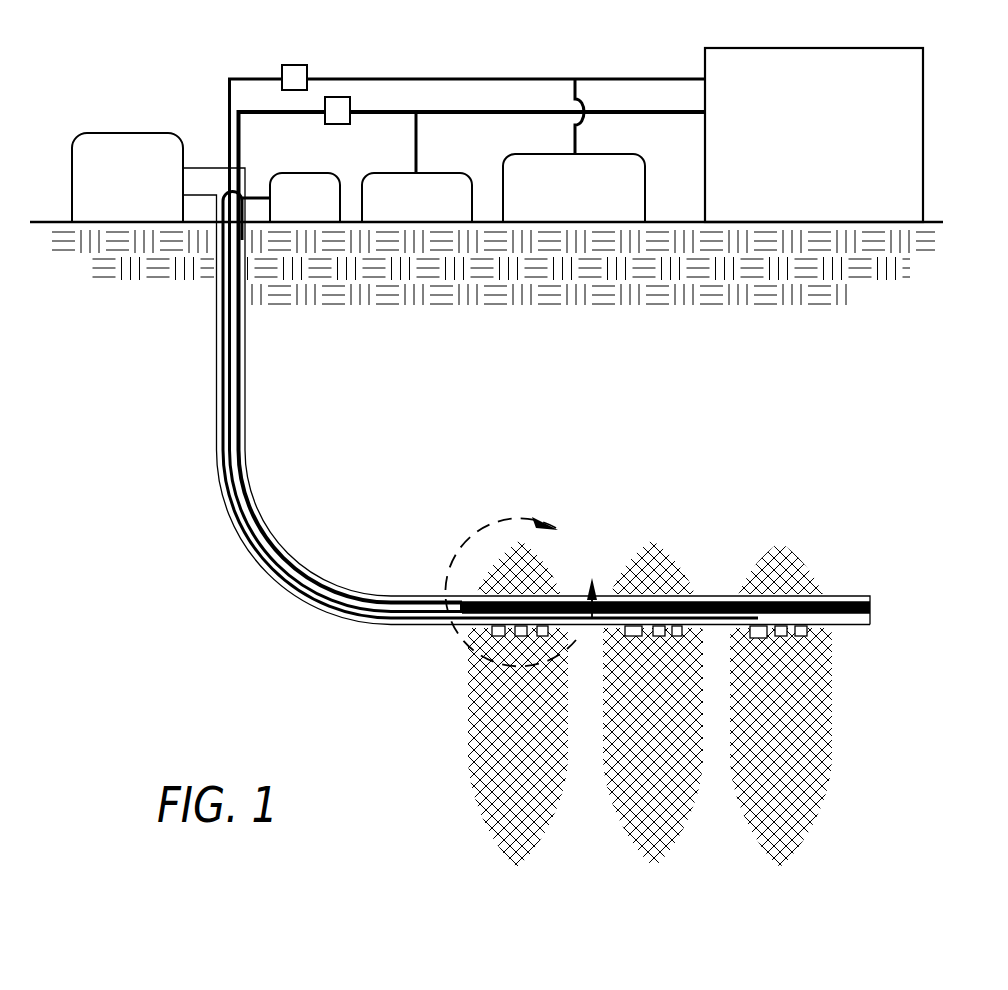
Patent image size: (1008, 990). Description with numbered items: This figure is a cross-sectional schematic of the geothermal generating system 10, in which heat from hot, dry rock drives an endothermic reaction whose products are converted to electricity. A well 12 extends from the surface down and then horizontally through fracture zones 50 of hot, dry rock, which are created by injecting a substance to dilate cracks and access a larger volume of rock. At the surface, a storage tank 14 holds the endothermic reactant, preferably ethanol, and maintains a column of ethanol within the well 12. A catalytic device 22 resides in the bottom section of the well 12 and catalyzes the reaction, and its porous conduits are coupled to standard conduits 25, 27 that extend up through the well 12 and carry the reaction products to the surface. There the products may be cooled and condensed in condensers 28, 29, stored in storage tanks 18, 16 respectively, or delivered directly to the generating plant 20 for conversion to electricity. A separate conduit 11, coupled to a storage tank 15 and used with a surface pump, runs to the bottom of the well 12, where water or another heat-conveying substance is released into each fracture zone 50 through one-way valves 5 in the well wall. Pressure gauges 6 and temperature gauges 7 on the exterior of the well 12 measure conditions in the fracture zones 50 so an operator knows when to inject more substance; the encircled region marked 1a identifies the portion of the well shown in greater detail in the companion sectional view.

The one-way valves 5 is at (498, 636).
The pressure gauges 6 is at (521, 636).
The temperature gauges 7 is at (543, 636).
The geothermal generating system 10 is at (165, 424).
The conduit 11 is at (222, 365).
The well 12 is at (245, 312).
The storage tank 14 is at (125, 133).
The storage tank 15 is at (302, 173).
The storage tank 16 is at (432, 173).
The storage tank 18 is at (600, 154).
The generating plant 20 is at (765, 48).
The catalytic device 22 is at (712, 597).
The standard conduit 25 is at (508, 80).
The standard conduit 27 is at (430, 112).
The condenser 28 is at (295, 65).
The condenser 29 is at (337, 97).
The fracture zones 50 is at (470, 775).
The section view indicator 1a is at (525, 591).